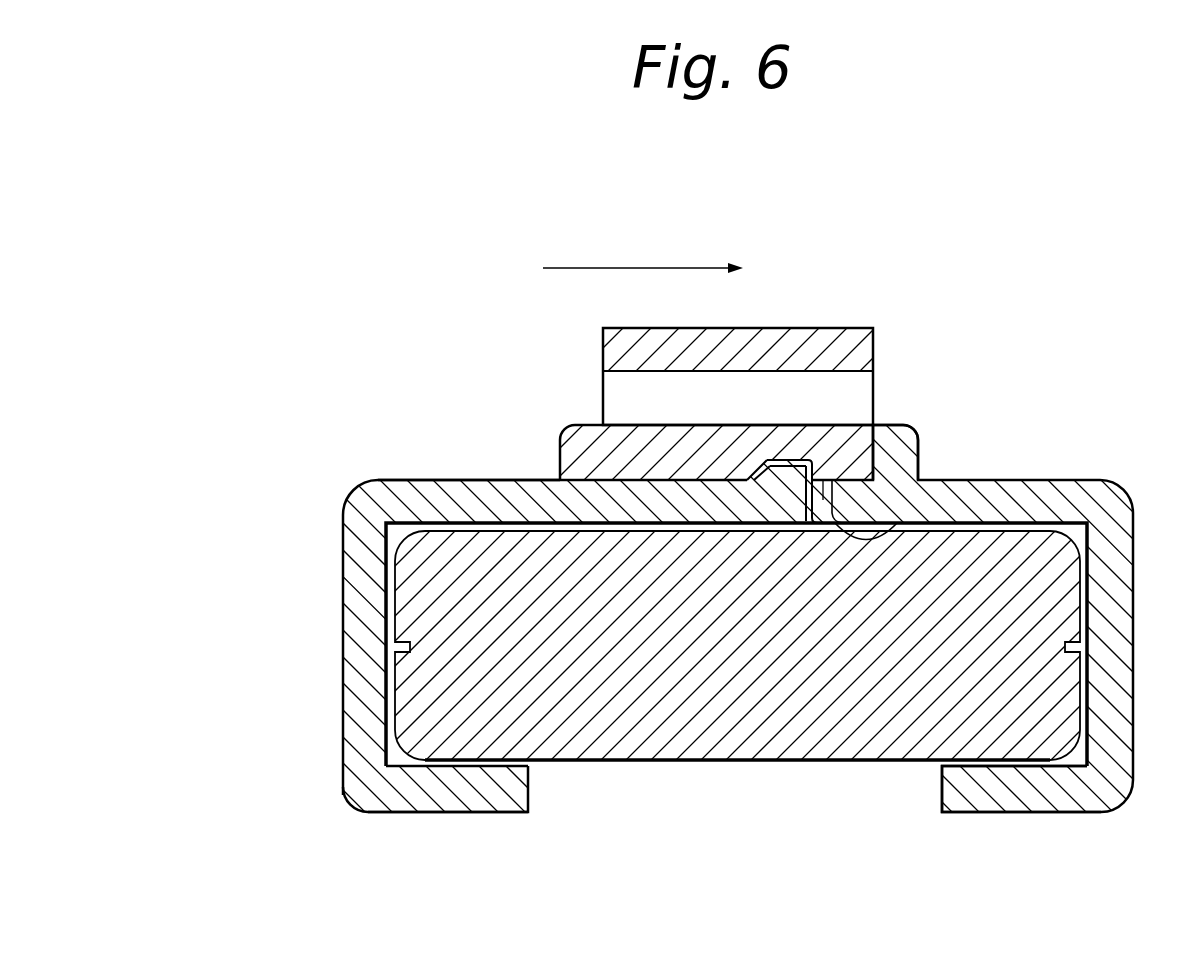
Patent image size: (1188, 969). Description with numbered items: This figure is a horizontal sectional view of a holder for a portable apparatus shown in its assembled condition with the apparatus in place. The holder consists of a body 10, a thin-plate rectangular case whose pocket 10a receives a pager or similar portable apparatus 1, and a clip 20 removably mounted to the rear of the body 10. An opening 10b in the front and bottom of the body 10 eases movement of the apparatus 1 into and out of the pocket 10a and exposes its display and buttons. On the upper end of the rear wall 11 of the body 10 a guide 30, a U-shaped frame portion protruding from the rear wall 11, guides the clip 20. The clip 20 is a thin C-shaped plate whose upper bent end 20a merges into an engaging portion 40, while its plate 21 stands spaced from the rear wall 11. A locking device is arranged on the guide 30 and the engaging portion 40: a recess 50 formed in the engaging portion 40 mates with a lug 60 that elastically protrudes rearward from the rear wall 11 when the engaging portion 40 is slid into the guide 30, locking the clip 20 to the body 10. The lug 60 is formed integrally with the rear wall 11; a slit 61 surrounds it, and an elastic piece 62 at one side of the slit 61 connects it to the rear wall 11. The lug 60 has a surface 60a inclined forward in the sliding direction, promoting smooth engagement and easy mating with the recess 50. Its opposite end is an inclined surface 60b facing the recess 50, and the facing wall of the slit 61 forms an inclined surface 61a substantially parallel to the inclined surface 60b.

The portable apparatus 1 is at (676, 715).
The body 10 is at (332, 583).
The pocket 10a is at (386, 764).
The opening 10b is at (940, 790).
The rear wall 11 is at (417, 478).
The clip 20 is at (712, 295).
The upper bent end 20a is at (603, 373).
The plate 21 is at (852, 328).
The guide 30 is at (919, 443).
The engaging portion 40 is at (556, 418).
The recess 50 is at (768, 553).
The lug 60 is at (753, 413).
The inclined surface 60a is at (760, 465).
The inclined surface 60b is at (816, 480).
The slit 61 is at (828, 520).
The inclined surface 61a is at (908, 527).
The elastic piece 62 is at (750, 478).